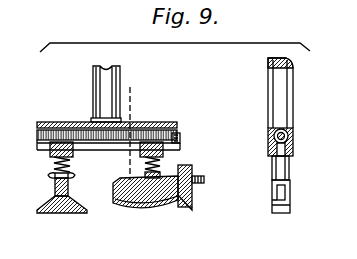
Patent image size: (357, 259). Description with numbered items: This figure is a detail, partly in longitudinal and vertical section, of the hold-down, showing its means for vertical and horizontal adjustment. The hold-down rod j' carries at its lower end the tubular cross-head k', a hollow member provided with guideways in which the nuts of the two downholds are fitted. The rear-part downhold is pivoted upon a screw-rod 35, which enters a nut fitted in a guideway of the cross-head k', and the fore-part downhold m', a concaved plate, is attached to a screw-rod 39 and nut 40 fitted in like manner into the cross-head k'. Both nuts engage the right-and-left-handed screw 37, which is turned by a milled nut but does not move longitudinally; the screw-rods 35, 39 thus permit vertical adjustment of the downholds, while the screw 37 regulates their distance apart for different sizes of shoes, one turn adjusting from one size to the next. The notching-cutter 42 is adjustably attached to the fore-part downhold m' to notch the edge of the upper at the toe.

The rod j' is at (97, 93).
The tubular cross-head k' is at (108, 128).
The fore-part downhold m' is at (145, 200).
The screw-rod 35 is at (52, 177).
The right-and-left-handed screw 37 is at (180, 138).
The screw-rod 39 is at (107, 220).
The nut 40 is at (164, 157).
The notching-cutter 42 is at (193, 201).